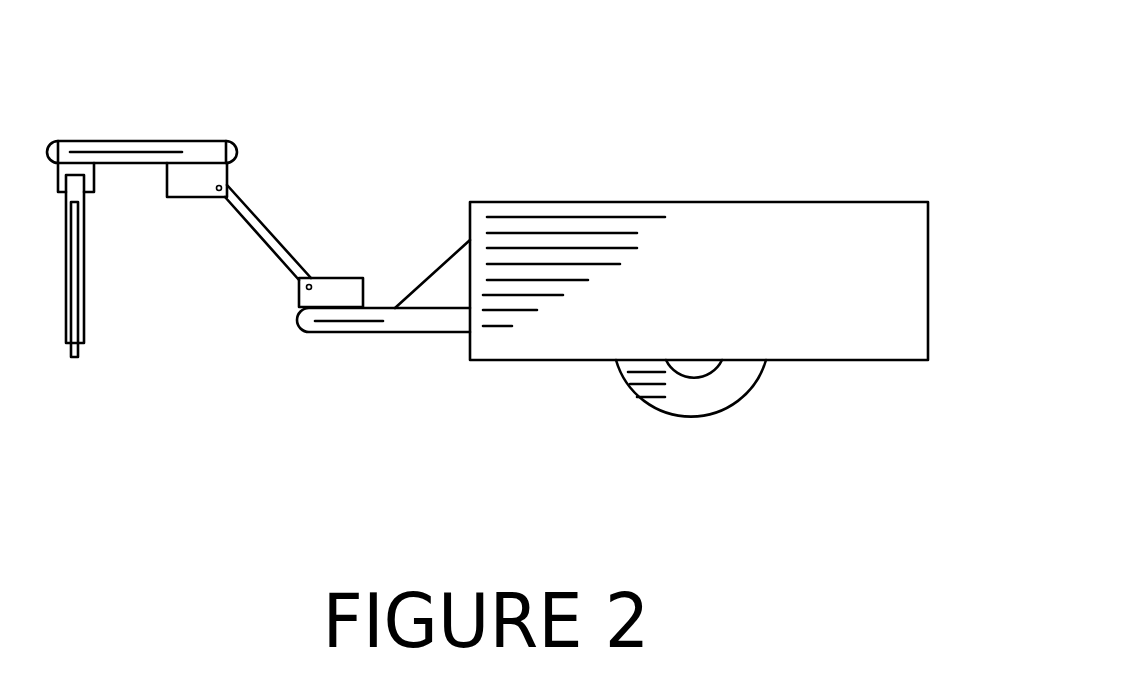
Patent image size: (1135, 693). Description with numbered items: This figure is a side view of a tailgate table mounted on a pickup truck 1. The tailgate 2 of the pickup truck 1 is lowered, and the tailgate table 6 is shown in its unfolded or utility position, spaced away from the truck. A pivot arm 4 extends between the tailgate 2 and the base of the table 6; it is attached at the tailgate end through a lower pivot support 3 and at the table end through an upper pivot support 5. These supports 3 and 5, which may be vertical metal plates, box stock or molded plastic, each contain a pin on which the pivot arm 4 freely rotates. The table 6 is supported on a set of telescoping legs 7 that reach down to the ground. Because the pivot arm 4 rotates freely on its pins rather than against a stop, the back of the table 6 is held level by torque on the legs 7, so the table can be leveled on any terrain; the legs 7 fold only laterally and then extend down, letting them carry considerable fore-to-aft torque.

The pickup truck 1 is at (663, 267).
The tailgate 2 is at (398, 333).
The lower pivot support 3 is at (342, 274).
The pivot arm 4 is at (262, 253).
The upper pivot support 5 is at (188, 205).
The tailgate table 6 is at (142, 135).
The telescoping legs 7 is at (90, 310).